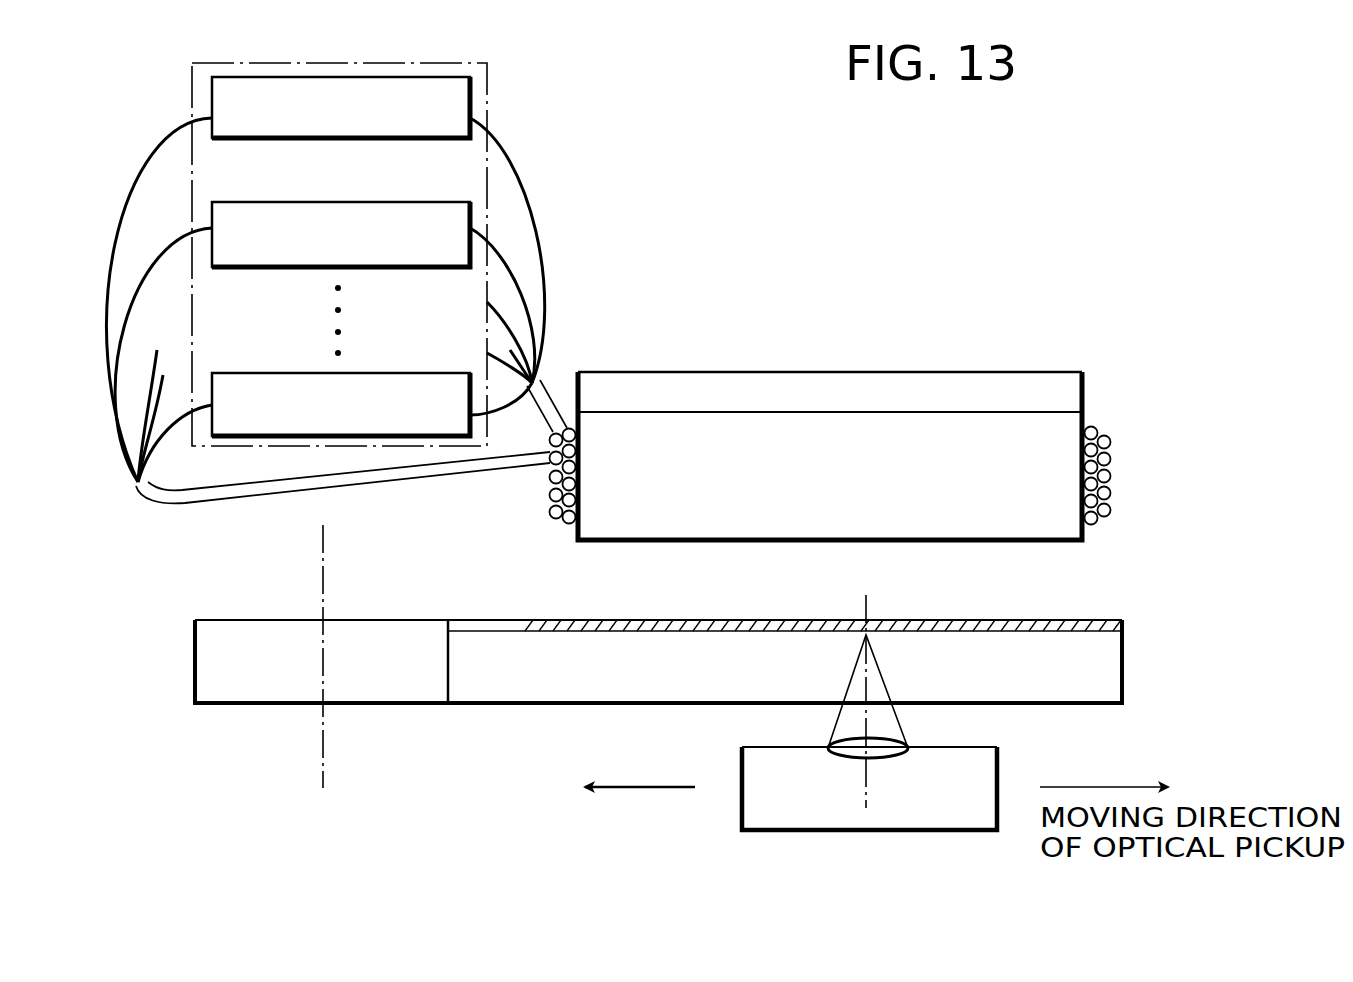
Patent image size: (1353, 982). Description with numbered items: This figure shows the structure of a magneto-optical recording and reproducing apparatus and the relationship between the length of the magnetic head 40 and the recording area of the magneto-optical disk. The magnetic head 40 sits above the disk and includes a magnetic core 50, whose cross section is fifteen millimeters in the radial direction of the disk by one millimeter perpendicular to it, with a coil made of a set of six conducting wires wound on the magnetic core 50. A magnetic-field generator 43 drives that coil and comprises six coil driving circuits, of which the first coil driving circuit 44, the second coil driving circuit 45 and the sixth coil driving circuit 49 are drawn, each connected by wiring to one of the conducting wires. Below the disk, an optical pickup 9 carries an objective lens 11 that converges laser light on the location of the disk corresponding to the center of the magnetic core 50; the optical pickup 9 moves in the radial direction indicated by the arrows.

The optical pickup 9 is at (885, 776).
The objective lens 11 is at (905, 740).
The magnetic head 40 is at (1134, 276).
The magnetic-field generator 43 is at (488, 64).
The first coil driving circuit 44 is at (470, 86).
The second coil driving circuit 45 is at (470, 206).
The sixth coil driving circuit 49 is at (432, 438).
The magnetic core 50 is at (995, 523).